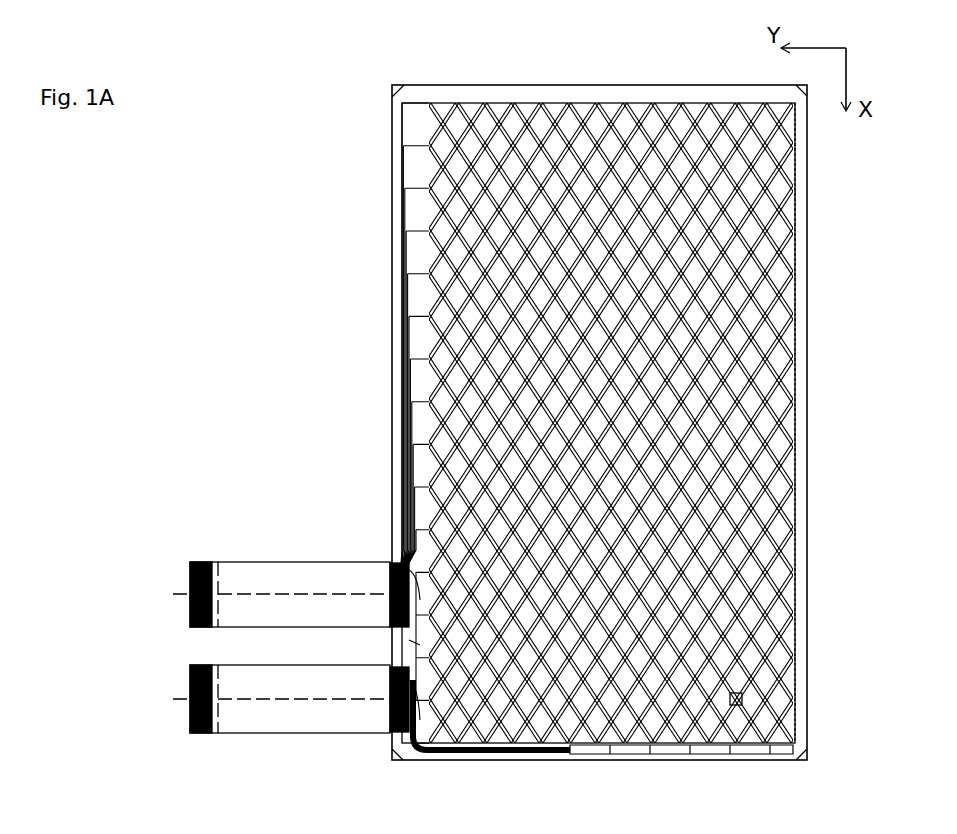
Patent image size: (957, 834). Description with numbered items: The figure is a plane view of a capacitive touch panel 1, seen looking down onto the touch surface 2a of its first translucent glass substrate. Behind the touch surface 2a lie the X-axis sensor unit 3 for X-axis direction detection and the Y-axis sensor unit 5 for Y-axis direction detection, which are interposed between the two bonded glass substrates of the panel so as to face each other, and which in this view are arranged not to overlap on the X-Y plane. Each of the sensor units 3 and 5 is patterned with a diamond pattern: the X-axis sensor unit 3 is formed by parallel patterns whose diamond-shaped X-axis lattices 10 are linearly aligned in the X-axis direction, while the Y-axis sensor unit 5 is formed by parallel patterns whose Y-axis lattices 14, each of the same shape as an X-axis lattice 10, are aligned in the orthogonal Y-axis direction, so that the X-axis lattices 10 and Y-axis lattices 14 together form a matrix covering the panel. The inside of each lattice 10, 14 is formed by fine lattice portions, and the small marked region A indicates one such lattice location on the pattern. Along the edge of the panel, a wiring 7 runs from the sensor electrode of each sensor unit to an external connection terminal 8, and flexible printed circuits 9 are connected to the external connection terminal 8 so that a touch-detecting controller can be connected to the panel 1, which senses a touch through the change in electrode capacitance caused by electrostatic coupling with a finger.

The capacitive touch panel 1 is at (371, 93).
The touch surface 2a is at (775, 272).
The X-axis sensor unit 3 is at (482, 380).
The Y-axis sensor unit 5 is at (527, 143).
The wiring 7 is at (403, 265).
The external connection terminal 8 is at (397, 560).
The flexible printed circuits 9 is at (290, 578).
The X-axis lattice 10 is at (540, 292).
The Y-axis lattice 14 is at (442, 140).
The detail region A is at (742, 700).